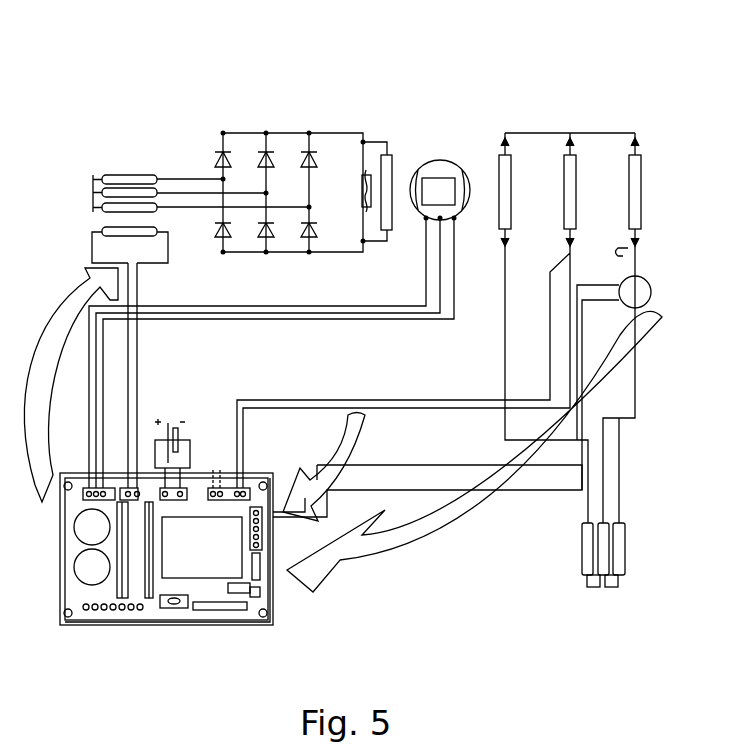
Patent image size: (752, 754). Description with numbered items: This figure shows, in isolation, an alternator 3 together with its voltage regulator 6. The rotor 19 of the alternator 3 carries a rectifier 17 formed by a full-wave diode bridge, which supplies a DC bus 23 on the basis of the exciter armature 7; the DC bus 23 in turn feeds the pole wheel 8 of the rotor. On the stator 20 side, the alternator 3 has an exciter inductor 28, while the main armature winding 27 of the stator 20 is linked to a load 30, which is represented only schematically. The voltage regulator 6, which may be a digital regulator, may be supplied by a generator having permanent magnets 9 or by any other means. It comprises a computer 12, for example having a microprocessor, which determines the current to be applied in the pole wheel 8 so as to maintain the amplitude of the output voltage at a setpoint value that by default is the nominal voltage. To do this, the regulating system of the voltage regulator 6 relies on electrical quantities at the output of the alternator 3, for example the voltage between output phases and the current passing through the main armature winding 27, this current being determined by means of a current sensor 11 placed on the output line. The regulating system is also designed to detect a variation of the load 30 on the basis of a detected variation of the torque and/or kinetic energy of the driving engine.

The alternator 3 is at (460, 83).
The voltage regulator 6 is at (90, 627).
The exciter armature 7 is at (115, 173).
The pole wheel 8 is at (400, 162).
The generator having permanent magnets 9 is at (443, 157).
The current sensor 11 is at (650, 296).
The computer 12 is at (232, 560).
The rectifier 17 is at (295, 137).
The rotor 19 is at (197, 137).
The stator 20 is at (597, 105).
The DC bus 23 is at (338, 132).
The main armature winding 27 is at (645, 188).
The exciter inductor 28 is at (107, 224).
The load 30 is at (580, 548).